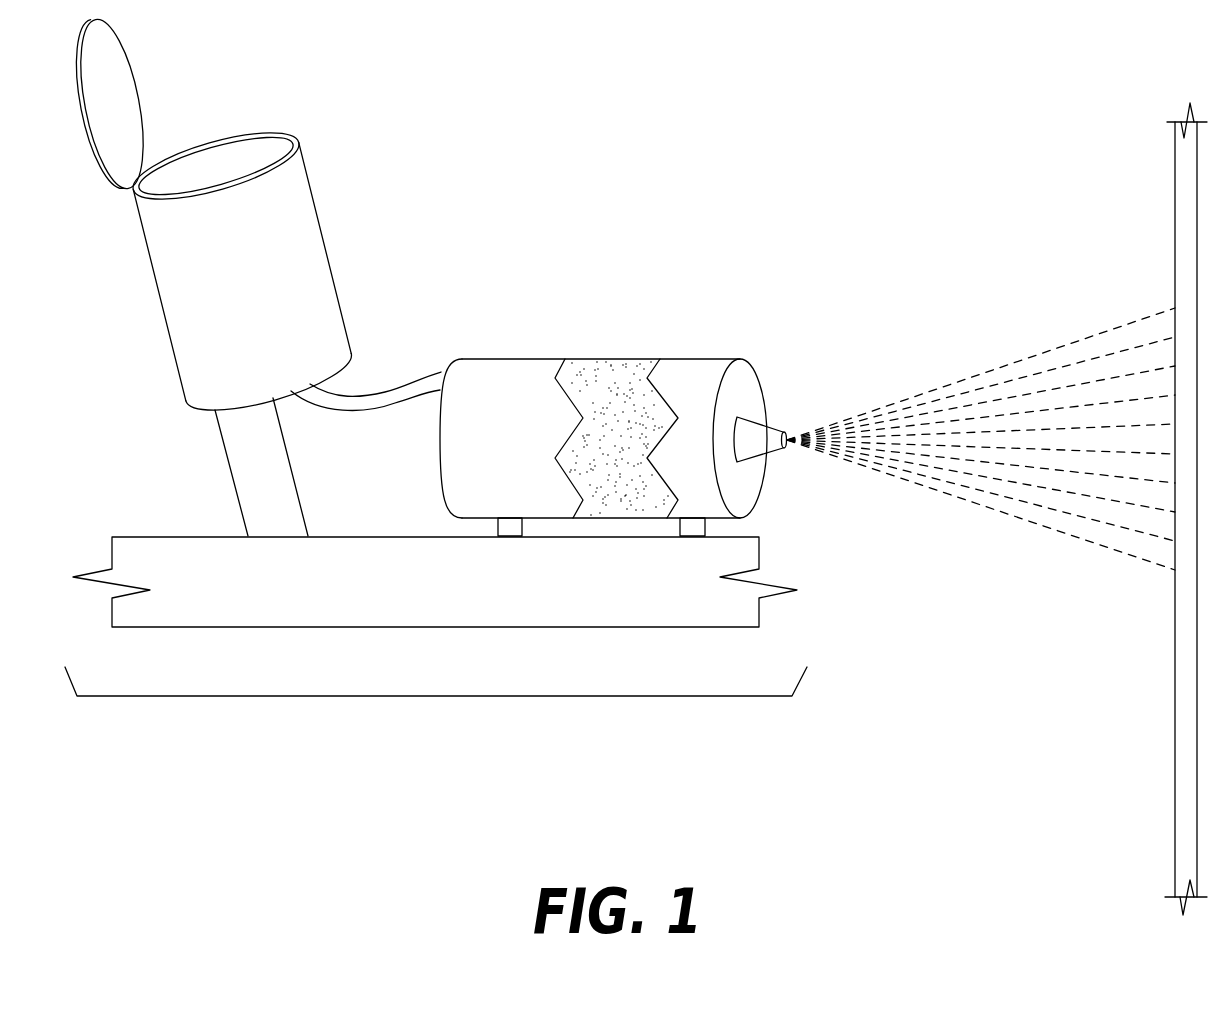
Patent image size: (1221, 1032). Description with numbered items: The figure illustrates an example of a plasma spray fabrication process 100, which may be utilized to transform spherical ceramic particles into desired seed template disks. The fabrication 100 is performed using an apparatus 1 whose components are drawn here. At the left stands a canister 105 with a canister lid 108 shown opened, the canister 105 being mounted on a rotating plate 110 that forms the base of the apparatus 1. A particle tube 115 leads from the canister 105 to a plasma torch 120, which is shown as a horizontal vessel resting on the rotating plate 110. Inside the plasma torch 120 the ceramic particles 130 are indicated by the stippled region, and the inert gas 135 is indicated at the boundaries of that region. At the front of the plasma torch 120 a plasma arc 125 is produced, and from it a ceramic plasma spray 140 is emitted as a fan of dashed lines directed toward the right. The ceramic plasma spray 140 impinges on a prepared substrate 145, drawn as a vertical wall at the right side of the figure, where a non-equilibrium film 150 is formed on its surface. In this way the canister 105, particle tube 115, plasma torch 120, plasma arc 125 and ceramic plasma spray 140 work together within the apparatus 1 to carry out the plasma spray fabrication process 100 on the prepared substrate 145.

The apparatus 1 is at (432, 697).
The plasma spray fabrication process 100 is at (860, 179).
The canister 105 is at (278, 195).
The canister lid 108 is at (125, 98).
The rotating plate 110 is at (190, 405).
The particle tube 115 is at (407, 397).
The plasma torch 120 is at (507, 390).
The plasma arc 125 is at (784, 428).
The ceramic particles 130 is at (622, 490).
The inert gas 135 is at (595, 497).
The ceramic plasma spray 140 is at (905, 458).
The prepared substrate 145 is at (1175, 203).
The non-equilibrium film 150 is at (1175, 697).